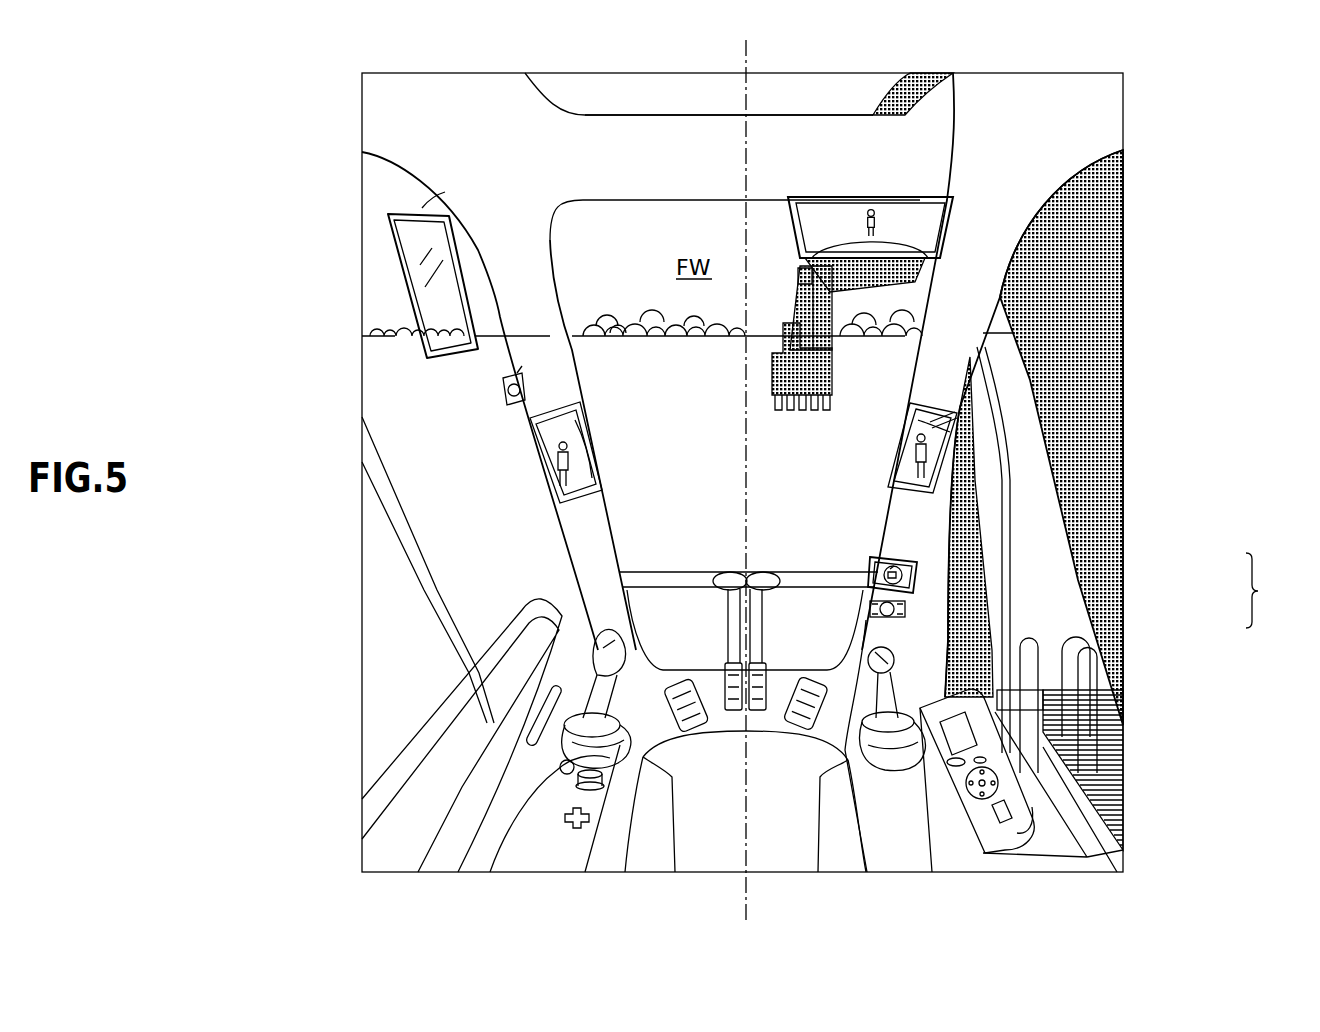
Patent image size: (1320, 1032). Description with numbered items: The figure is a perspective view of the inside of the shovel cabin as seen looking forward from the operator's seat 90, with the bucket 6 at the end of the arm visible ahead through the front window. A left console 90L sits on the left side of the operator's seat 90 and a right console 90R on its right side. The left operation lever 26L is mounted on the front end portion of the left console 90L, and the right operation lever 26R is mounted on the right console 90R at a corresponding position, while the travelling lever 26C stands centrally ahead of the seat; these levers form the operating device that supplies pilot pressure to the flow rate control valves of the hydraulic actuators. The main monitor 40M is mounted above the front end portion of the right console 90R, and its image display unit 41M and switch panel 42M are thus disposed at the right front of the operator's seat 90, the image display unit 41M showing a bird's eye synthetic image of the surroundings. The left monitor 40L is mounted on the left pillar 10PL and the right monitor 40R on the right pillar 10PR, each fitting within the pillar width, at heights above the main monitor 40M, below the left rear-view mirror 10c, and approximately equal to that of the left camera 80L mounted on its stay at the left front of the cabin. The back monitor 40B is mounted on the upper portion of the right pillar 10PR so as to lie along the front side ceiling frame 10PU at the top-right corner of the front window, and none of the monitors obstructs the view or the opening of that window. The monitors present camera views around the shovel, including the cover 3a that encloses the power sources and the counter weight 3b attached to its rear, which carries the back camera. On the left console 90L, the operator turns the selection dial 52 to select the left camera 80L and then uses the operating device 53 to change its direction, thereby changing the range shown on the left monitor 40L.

The front side ceiling frame 10PU is at (667, 155).
The counter weight 3b is at (850, 250).
The back monitor 40B is at (913, 217).
The left rear-view mirror 10c is at (410, 270).
The left pillar 10PL is at (529, 353).
The left camera 80L is at (505, 393).
The cover 3a is at (555, 447).
The left monitor 40L is at (542, 452).
The left operation lever 26L is at (600, 631).
The selection dial 52 is at (555, 766).
The operating device 53 is at (560, 820).
The left console 90L is at (603, 815).
The operator's seat 90 is at (787, 850).
The right console 90R is at (905, 835).
The travelling lever 26C is at (765, 575).
The bucket 6 is at (800, 373).
The right pillar 10PR is at (945, 397).
The right monitor 40R is at (945, 467).
The image display unit 41M is at (905, 568).
The switch panel 42M is at (905, 606).
The main monitor 40M is at (1278, 590).
The right operation lever 26R is at (885, 646).